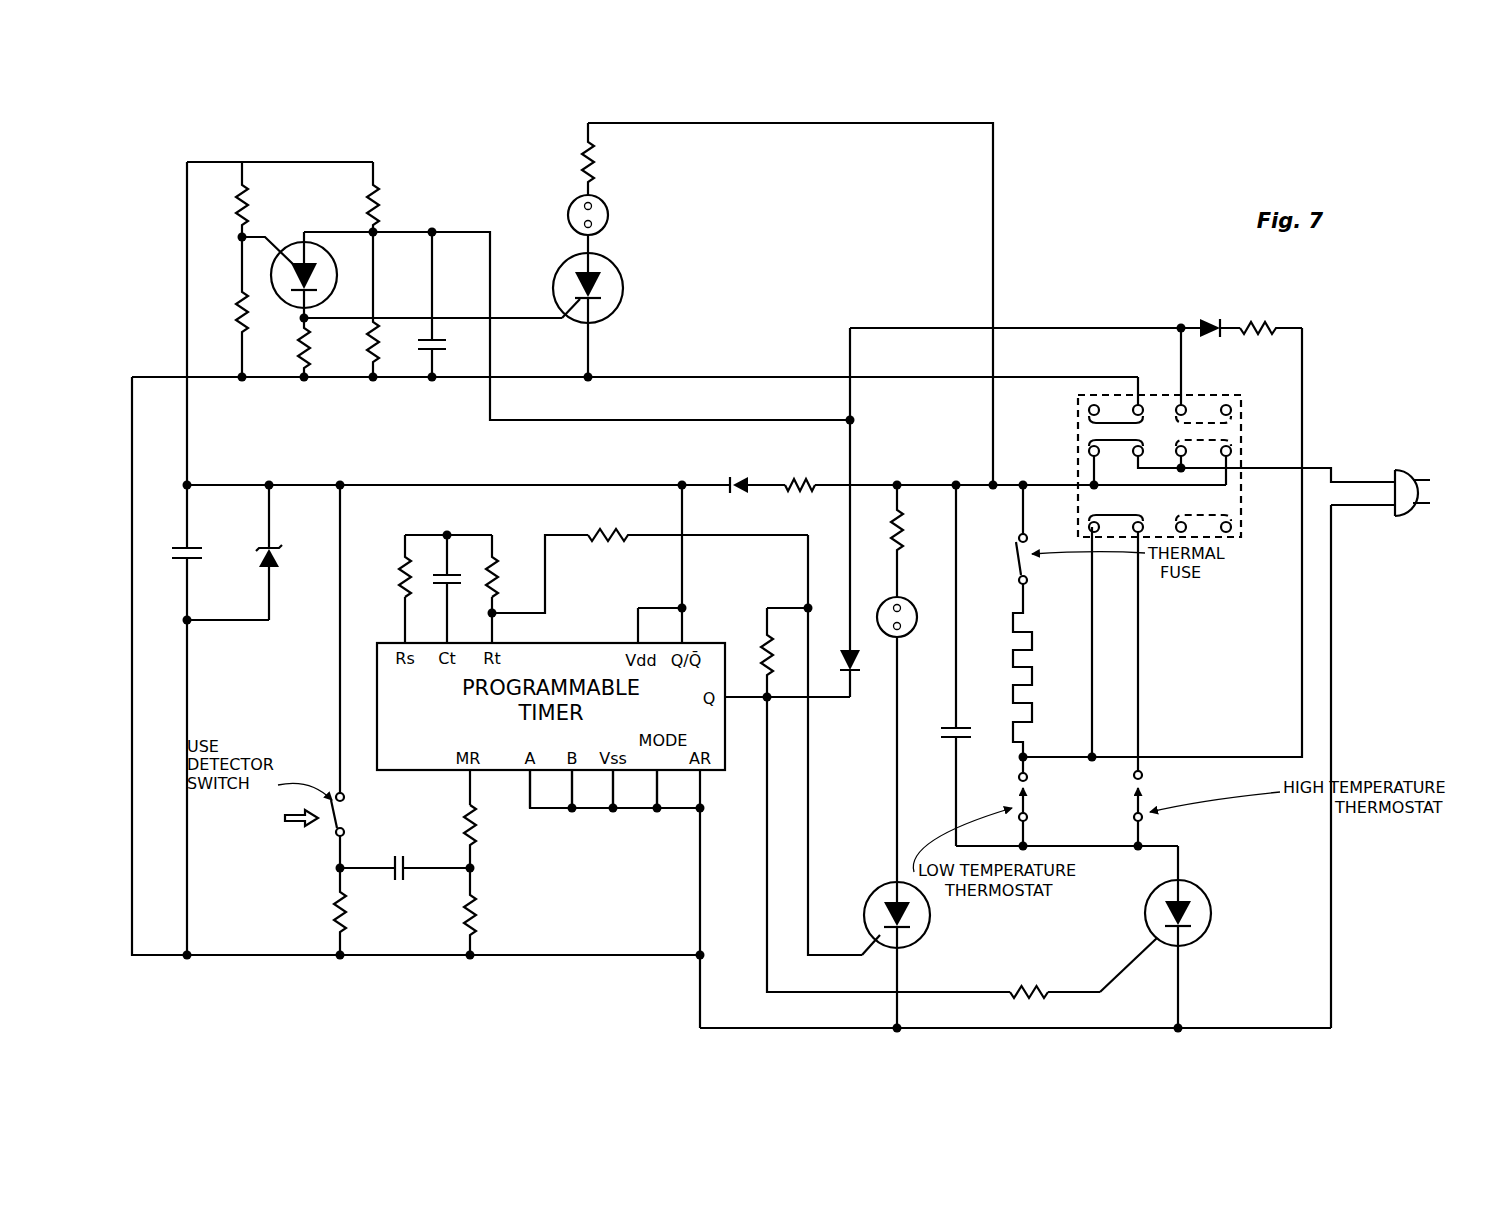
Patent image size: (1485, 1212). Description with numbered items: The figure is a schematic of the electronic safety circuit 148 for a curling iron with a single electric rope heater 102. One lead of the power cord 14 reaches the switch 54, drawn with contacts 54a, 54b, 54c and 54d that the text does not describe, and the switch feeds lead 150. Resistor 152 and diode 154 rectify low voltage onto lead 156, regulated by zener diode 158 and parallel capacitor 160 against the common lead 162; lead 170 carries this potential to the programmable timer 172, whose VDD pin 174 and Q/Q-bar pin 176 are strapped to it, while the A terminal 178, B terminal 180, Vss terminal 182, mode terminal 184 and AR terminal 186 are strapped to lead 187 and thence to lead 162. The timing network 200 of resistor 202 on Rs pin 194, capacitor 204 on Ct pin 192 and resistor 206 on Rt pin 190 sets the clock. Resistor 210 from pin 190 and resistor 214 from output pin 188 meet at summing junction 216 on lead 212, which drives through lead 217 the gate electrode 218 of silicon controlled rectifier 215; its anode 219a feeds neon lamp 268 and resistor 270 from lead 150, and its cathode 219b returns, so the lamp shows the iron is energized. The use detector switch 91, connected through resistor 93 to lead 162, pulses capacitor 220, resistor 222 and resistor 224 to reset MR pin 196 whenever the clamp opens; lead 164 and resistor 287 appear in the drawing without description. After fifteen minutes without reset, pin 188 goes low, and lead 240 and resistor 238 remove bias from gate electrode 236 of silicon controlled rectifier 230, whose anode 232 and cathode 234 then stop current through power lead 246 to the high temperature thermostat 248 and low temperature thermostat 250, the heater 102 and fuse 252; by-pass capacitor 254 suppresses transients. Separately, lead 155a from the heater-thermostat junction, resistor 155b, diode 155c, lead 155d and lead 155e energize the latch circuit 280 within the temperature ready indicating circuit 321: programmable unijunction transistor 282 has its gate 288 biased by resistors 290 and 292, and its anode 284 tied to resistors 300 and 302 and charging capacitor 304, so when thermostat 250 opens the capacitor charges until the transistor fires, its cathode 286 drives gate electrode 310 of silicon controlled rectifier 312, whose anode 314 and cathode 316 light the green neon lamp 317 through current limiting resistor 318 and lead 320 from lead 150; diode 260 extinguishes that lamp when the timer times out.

The power cord 14 is at (1376, 482).
The switch 54 is at (1242, 400).
The switch contact 54a is at (1142, 406).
The switch contact 54b is at (1183, 406).
The switch contact 54c is at (1090, 453).
The switch contact 54d is at (1231, 452).
The switch 91 is at (337, 816).
The resistor 93 is at (340, 906).
The electric rope heater 102 is at (1031, 641).
The electronic safety circuit 148 is at (1062, 325).
The lead 150 is at (1020, 482).
The resistor 152 is at (800, 478).
The diode 154 is at (740, 476).
The lead 155a is at (1093, 606).
The resistor 155b is at (1256, 324).
The diode 155c is at (1212, 320).
The lead 155d is at (930, 328).
The lead 155e is at (578, 420).
The lead 156 is at (680, 484).
The zener diode 158 is at (275, 557).
The capacitor 160 is at (205, 552).
The common lead 162 is at (338, 378).
The conductor 164 is at (340, 726).
The lead 170 is at (682, 521).
The programmable timer 172 is at (686, 636).
The VDD pin 174 is at (638, 626).
The Q/Q-bar pin 176 is at (660, 608).
The A terminal 178 is at (530, 776).
The B terminal 180 is at (572, 809).
The Vss terminal 182 is at (613, 809).
The mode terminal 184 is at (657, 809).
The AR terminal 186 is at (700, 809).
The lead 187 is at (700, 901).
The output pin 188 is at (746, 704).
The Rt pin 190 is at (494, 621).
The Ct pin 192 is at (448, 631).
The Rs pin 194 is at (405, 621).
The MR pin 196 is at (466, 790).
The timing network 200 is at (460, 531).
The resistor 202 is at (400, 578).
The capacitor 204 is at (446, 584).
The resistor 206 is at (492, 578).
The resistor 210 is at (611, 531).
The lead 212 is at (730, 535).
The resistor 214 is at (773, 666).
The silicon controlled rectifier 215 is at (931, 913).
The summing junction 216 is at (808, 606).
The lead 217 is at (812, 790).
The gate electrode 218 is at (870, 950).
The anode 219a is at (896, 880).
The cathode 219b is at (900, 971).
The capacitor 220 is at (400, 860).
The resistor 222 is at (477, 842).
The resistor 224 is at (477, 920).
The silicon controlled rectifier 230 is at (1212, 913).
The anode 232 is at (1180, 861).
The cathode 234 is at (1180, 986).
The gate electrode 236 is at (1121, 976).
The resistor 238 is at (1030, 991).
The lead 240 is at (812, 993).
The power lead 246 is at (1103, 845).
The first thermostat 248 is at (1146, 806).
The second thermostat 250 is at (1030, 806).
The fuse 252 is at (1028, 546).
The by-pass capacitor 254 is at (965, 731).
The diode 260 is at (856, 666).
The neon lamp 268 is at (912, 608).
The resistor 270 is at (900, 531).
The latch circuit 280 is at (277, 388).
The programmable unijunction transistor 282 is at (272, 268).
The anode 284 is at (304, 234).
The cathode 286 is at (306, 317).
The resistor 287 is at (304, 349).
The gate 288 is at (250, 237).
The resistor 290 is at (242, 312).
The resistor 292 is at (242, 204).
The resistor 300 is at (374, 206).
The resistor 302 is at (373, 346).
The charging capacitor 304 is at (434, 346).
The gate electrode 310 is at (562, 318).
The silicon controlled rectifier 312 is at (624, 289).
The anode 314 is at (589, 244).
The cathode 316 is at (590, 341).
The green neon lamp 317 is at (608, 215).
The current limiting resistor 318 is at (594, 163).
The lead 320 is at (794, 126).
The temperature ready indicating circuit 321 is at (335, 158).